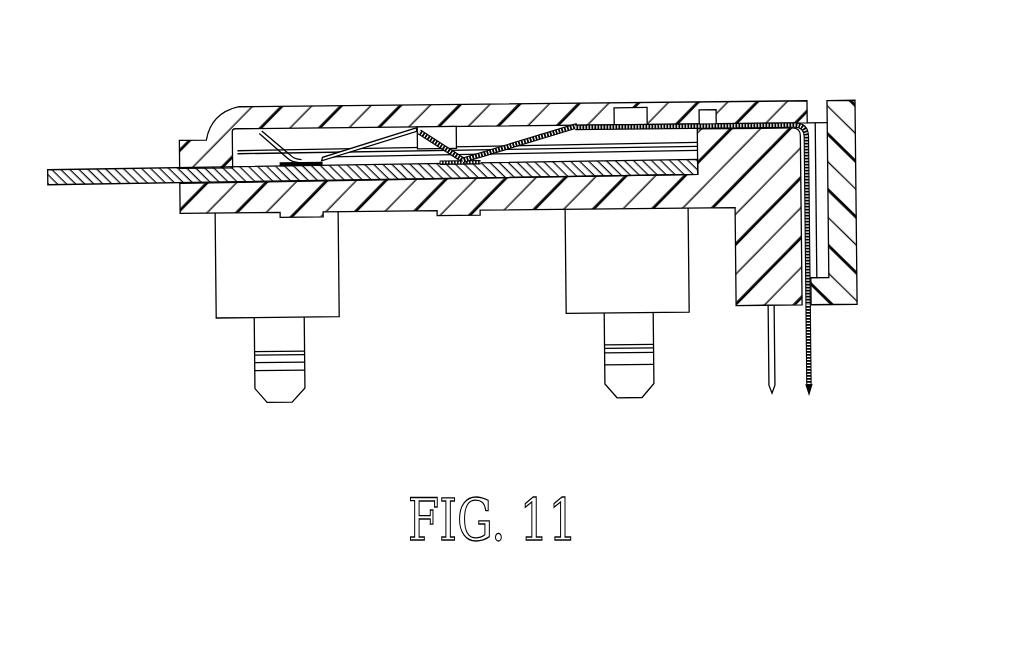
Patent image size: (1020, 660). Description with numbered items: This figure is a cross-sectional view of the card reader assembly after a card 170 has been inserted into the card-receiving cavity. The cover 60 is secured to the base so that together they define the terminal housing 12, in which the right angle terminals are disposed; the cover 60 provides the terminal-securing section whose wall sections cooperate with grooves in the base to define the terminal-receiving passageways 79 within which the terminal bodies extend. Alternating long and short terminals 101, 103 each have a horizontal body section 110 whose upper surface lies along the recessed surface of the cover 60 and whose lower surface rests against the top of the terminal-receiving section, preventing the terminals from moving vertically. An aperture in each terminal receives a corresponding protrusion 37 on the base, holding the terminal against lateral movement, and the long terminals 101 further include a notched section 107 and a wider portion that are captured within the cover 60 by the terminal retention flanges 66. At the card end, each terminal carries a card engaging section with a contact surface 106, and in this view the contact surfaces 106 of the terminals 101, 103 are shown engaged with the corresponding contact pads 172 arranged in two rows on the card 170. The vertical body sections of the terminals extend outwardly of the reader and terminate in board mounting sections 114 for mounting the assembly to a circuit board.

The terminal housing 12 is at (878, 116).
The protrusion 37 is at (696, 112).
The cover 60 is at (756, 86).
The terminal retention flange 66 is at (440, 126).
The terminal-receiving passageway 79 is at (816, 210).
The long terminal 101 is at (386, 123).
The short terminal 103 is at (534, 162).
The contact surface 106 is at (302, 165).
The notched section 107 is at (510, 112).
The horizontal body section 110 is at (638, 109).
The board mounting section 114 is at (767, 361).
The card 170 is at (86, 151).
The contact pad 172 is at (326, 152).